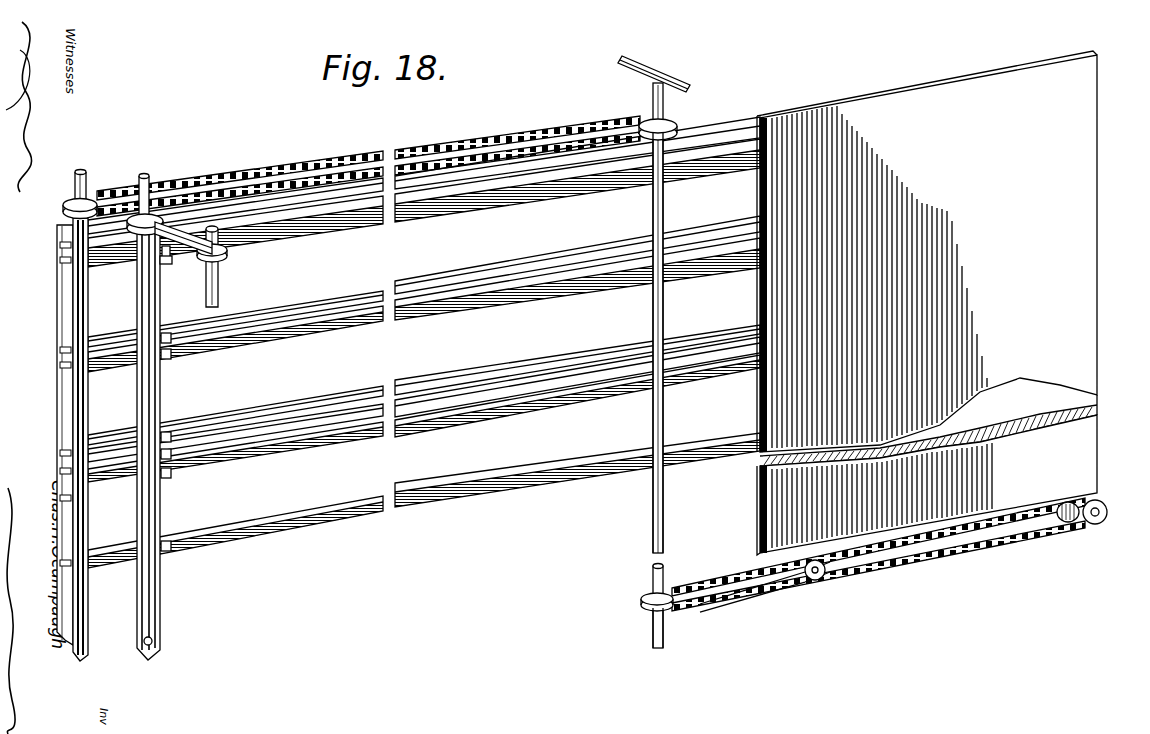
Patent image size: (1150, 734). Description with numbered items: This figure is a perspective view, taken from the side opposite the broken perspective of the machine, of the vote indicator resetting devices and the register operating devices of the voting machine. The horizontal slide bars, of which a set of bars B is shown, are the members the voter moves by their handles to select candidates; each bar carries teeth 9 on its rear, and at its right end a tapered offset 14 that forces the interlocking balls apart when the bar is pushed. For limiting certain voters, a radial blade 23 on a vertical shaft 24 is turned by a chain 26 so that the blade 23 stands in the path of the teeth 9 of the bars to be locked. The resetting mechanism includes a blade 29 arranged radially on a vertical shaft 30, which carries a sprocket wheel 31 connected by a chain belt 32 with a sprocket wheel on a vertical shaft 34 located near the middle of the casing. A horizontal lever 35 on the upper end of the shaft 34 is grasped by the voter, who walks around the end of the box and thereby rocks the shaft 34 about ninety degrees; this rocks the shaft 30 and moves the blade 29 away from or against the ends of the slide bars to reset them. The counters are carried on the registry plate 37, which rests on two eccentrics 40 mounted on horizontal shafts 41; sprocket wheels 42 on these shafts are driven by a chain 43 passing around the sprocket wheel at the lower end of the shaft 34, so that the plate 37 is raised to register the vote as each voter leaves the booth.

The teeth 9 is at (176, 360).
The offsets 14 is at (56, 268).
The radial blade 23 is at (174, 292).
The vertical shaft 24 is at (153, 190).
The chain 26 is at (206, 258).
The blade 29 is at (57, 386).
The vertical shaft 30 is at (73, 179).
The sprocket wheel 31 is at (64, 216).
The chain belt 32 is at (309, 171).
The vertical shaft 34 is at (676, 116).
The horizontal lever 35 is at (668, 84).
The registry plate 37 is at (928, 430).
The eccentrics 40 is at (800, 584).
The horizontal shafts 41 is at (826, 578).
The sprocket wheels 42 is at (822, 580).
The chain 43 is at (1012, 541).
The set of bars B is at (424, 342).